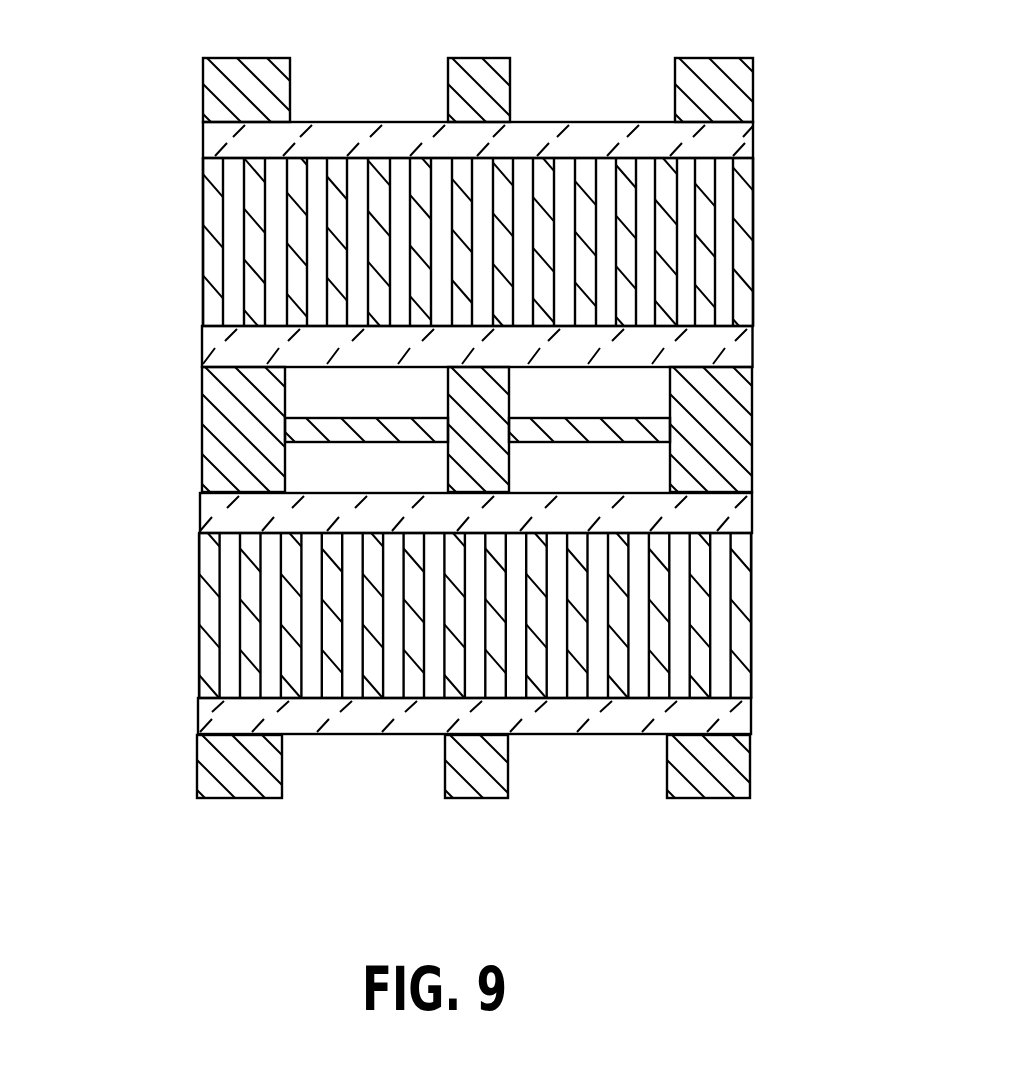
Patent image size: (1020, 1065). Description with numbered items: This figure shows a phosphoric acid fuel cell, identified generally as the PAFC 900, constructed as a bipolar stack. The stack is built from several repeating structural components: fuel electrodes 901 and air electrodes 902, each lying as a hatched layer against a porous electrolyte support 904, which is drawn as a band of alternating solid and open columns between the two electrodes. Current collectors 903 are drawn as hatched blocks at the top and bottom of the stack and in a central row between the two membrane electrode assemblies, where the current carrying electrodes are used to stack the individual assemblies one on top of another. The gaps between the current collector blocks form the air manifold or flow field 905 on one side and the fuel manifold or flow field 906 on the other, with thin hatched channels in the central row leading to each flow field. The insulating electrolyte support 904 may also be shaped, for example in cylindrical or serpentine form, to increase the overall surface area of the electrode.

The PAFC 900 is at (798, 133).
The fuel electrode 901 is at (203, 353).
The air electrode 902 is at (203, 138).
The current collector 903 is at (203, 107).
The porous electrolyte support 904 is at (203, 250).
The air manifold or flow field 905 is at (378, 107).
The fuel manifold or flow field 906 is at (633, 103).